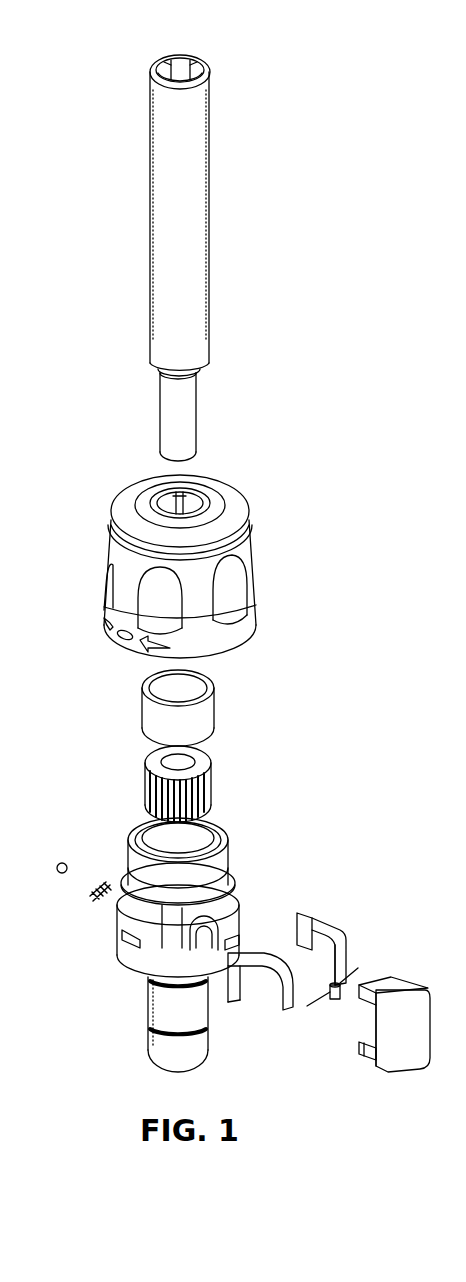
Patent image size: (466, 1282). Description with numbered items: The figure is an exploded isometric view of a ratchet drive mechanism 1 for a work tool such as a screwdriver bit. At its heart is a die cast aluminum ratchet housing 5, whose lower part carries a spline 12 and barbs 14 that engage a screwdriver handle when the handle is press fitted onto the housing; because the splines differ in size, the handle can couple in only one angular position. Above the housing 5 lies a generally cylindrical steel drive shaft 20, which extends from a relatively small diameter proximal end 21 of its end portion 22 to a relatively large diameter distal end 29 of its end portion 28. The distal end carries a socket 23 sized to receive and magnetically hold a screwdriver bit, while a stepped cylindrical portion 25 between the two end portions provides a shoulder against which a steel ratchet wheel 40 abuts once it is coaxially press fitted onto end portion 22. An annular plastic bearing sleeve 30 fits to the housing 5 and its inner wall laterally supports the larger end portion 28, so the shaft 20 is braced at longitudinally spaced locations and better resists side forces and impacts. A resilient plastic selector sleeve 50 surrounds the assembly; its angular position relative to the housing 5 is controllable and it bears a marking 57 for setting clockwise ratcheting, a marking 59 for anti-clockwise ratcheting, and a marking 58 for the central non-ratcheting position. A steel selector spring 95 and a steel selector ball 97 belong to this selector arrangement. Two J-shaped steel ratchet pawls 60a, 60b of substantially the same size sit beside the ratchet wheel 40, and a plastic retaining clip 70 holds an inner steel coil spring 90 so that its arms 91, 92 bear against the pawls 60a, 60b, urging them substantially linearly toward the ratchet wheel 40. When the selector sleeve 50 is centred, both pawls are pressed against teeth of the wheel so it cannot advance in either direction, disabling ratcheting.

The ratchet drive mechanism 1 is at (262, 140).
The ratchet housing 5 is at (115, 833).
The spline 12 is at (148, 1003).
The barbs 14 is at (186, 986).
The drive shaft 20 is at (150, 153).
The proximal end 21 is at (163, 457).
The end portion 22 is at (167, 418).
The socket 23 is at (173, 70).
The stepped cylindrical portion 25 is at (160, 375).
The end portion 28 is at (163, 195).
The distal end 29 is at (158, 63).
The bearing sleeve 30 is at (207, 707).
The ratchet wheel 40 is at (210, 780).
The selector sleeve 50 is at (95, 509).
The marking 57 is at (103, 621).
The marking 58 is at (120, 637).
The marking 59 is at (147, 645).
The ratchet pawl 60a is at (248, 990).
The ratchet pawl 60b is at (316, 930).
The retaining clip 70 is at (415, 1020).
The coil spring 90 is at (335, 999).
The arm 91 is at (311, 1008).
The arm 92 is at (350, 970).
The selector spring 95 is at (92, 895).
The selector ball 97 is at (56, 870).